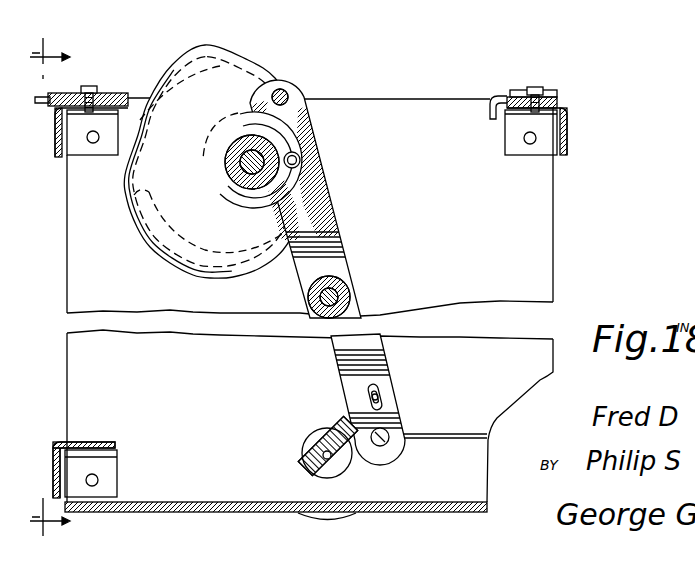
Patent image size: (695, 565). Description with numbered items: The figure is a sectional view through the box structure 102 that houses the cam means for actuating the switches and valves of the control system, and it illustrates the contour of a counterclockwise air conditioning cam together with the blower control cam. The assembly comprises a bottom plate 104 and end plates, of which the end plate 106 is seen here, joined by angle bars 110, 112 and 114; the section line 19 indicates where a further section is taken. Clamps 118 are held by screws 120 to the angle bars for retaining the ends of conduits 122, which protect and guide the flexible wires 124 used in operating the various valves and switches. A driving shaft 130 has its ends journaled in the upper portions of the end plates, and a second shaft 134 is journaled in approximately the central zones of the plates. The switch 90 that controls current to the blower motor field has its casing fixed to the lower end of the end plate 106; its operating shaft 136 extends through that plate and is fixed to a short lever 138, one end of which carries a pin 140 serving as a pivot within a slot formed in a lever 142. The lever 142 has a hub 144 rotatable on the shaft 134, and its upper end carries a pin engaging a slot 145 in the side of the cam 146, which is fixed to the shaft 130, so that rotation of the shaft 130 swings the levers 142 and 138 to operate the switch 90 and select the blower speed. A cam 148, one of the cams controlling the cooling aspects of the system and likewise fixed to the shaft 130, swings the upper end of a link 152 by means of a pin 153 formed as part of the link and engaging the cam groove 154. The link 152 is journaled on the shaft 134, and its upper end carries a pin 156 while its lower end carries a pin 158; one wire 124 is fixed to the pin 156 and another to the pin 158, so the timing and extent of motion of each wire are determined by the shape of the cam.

The section line 19- 19 is at (63, 289).
The switch 90 is at (300, 518).
The box structure 102 is at (415, 102).
The bottom plate 104 is at (160, 503).
The end plate 106 is at (331, 118).
The angle bar 110 is at (58, 157).
The angle bar 112 is at (569, 118).
The angle bar 114 is at (96, 441).
The clamp 118 is at (106, 93).
The screw 120 is at (538, 90).
The conduit 122 is at (130, 103).
The flexible wire 124 is at (162, 98).
The driving shaft 130 is at (235, 173).
The second shaft 134 is at (351, 300).
The operating shaft 136 is at (312, 446).
The short lever 138 is at (345, 420).
The pin 140 is at (383, 390).
The lever 142 is at (389, 403).
The hub 144 is at (336, 284).
The slot 145 is at (252, 62).
The cam 146 is at (247, 52).
The cam 148 is at (143, 153).
The link 152 is at (320, 213).
The pin 153 is at (301, 160).
The cam groove 154 is at (268, 218).
The pin 156 is at (289, 92).
The pin 158 is at (383, 446).